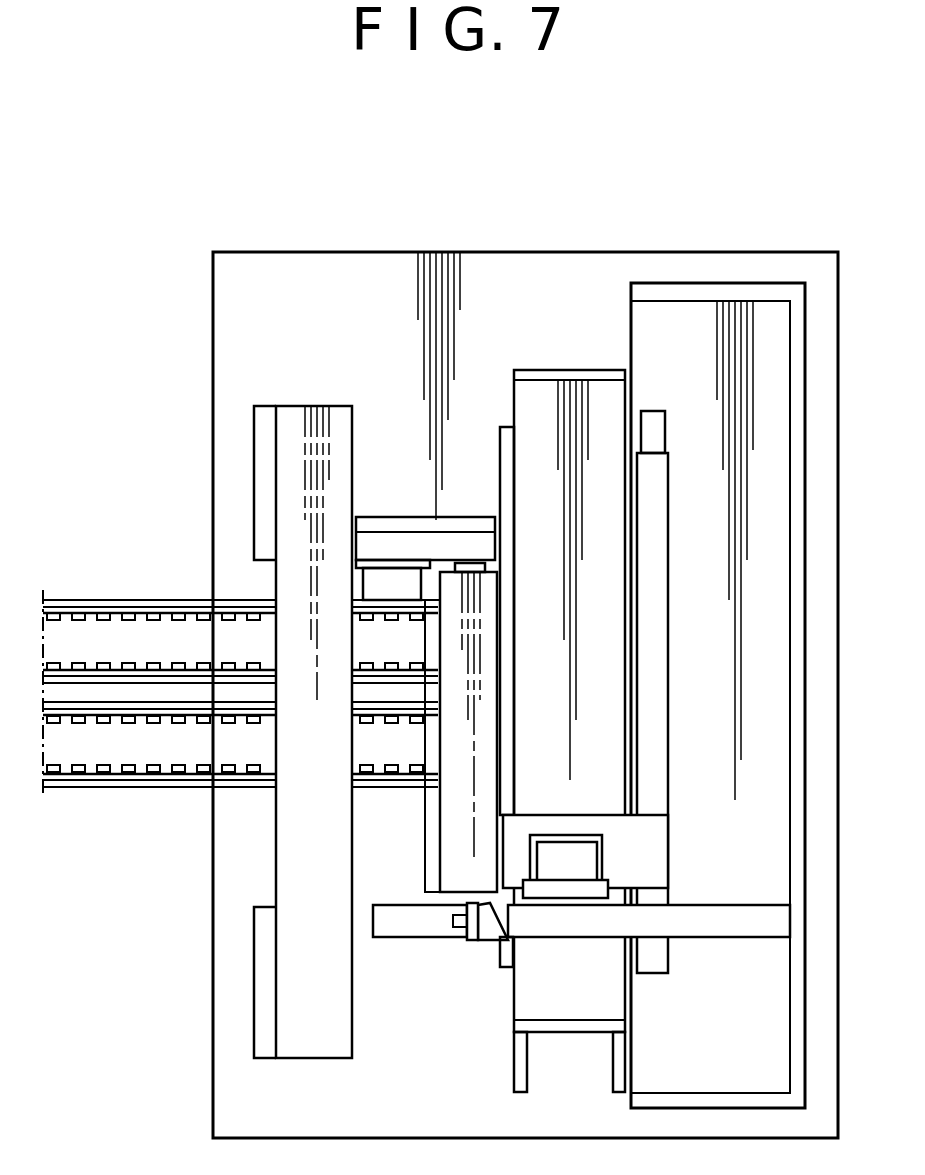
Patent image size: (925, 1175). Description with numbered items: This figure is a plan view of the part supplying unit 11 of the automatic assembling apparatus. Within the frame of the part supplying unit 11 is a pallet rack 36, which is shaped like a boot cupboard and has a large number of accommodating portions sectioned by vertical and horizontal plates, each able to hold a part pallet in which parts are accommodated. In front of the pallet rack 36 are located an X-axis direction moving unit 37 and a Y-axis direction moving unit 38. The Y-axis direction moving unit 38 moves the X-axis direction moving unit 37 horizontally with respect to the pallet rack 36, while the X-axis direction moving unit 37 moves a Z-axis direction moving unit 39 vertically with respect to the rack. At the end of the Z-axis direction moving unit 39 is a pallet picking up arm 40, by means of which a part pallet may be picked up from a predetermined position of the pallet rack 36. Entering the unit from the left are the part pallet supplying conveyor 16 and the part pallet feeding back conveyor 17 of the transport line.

The part supplying unit 11 is at (562, 251).
The part pallet supplying conveyor 16 is at (127, 600).
The part pallet feeding back conveyor 17 is at (116, 787).
The pallet rack 36 is at (321, 418).
The X-axis direction moving unit 37 is at (585, 857).
The Y-axis direction moving unit 38 is at (612, 632).
The Z-axis direction moving unit 39 is at (540, 922).
The pallet picking up arm 40 is at (410, 922).